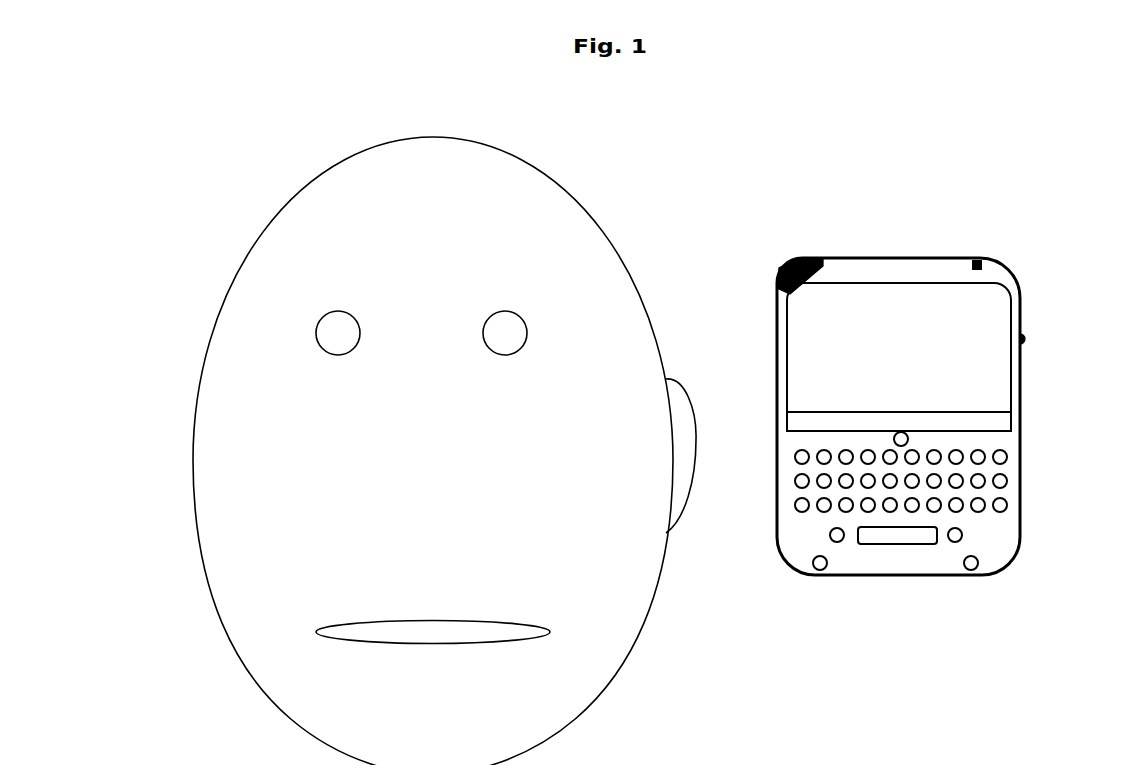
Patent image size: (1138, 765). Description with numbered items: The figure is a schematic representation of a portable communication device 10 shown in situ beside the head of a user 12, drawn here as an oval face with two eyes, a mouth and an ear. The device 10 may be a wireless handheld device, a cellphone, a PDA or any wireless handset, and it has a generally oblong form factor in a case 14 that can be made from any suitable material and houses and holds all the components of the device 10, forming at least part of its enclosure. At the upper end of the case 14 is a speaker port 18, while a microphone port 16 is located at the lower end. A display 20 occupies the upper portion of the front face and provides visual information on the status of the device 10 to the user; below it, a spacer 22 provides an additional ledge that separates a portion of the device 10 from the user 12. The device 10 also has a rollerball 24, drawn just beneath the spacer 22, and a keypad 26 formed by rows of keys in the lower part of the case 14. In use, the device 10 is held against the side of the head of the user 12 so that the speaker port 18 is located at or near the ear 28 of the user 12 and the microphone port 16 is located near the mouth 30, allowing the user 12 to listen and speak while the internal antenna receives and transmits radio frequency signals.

The portable communication device 10 is at (1042, 382).
The user 12 is at (238, 648).
The case 14 is at (1002, 280).
The microphone port 16 is at (820, 560).
The speaker port 18 is at (805, 258).
The display 20 is at (993, 400).
The spacer 22 is at (1005, 427).
The rollerball 24 is at (901, 446).
The keypad 26 is at (1002, 547).
The ear 28 is at (688, 437).
The mouth 30 is at (470, 603).